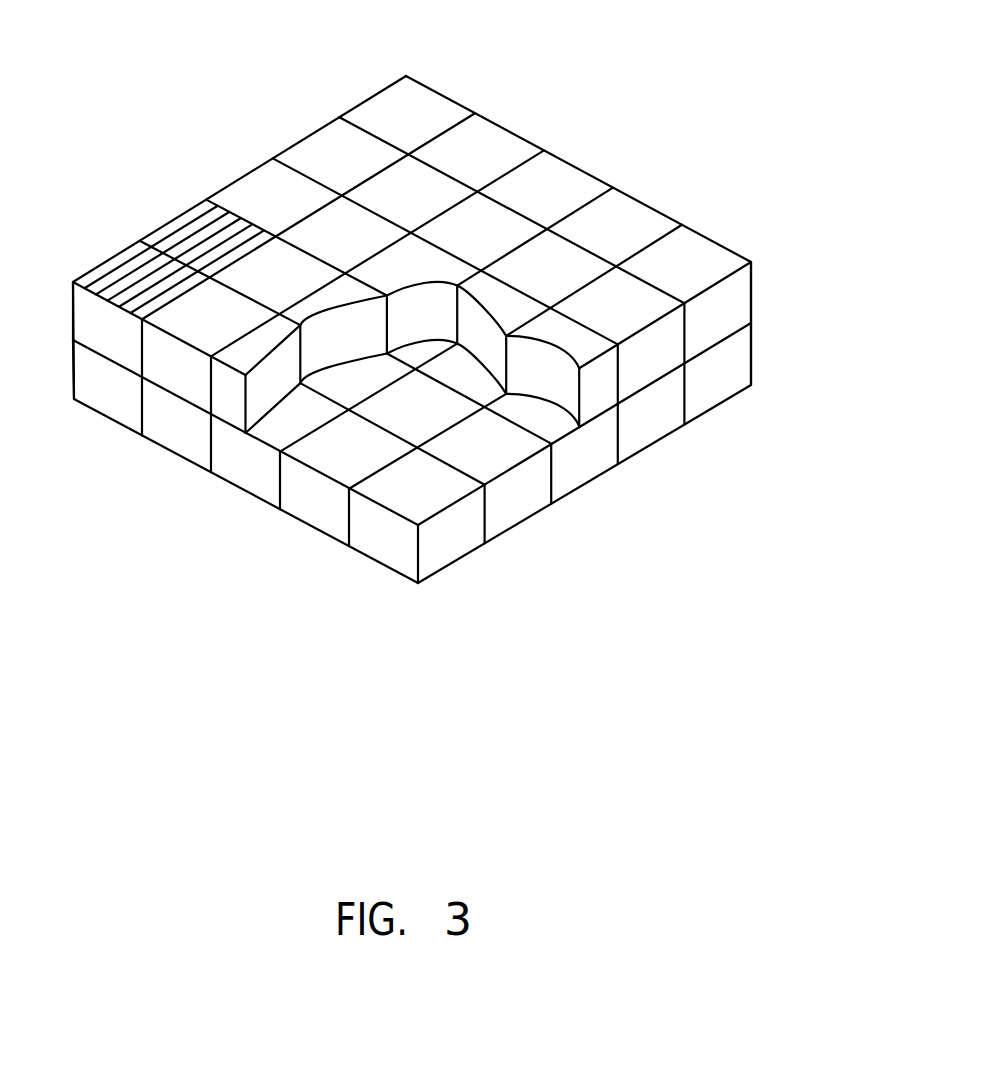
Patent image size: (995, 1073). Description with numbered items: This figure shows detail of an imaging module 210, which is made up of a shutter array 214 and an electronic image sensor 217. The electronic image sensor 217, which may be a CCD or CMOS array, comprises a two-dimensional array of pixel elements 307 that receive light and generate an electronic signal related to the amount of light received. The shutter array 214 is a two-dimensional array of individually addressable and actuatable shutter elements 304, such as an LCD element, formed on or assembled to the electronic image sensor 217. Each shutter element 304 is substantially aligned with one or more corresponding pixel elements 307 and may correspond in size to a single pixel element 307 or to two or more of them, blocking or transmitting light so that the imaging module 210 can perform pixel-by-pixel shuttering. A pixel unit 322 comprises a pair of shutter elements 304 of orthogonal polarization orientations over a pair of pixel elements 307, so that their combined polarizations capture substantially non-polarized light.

The imaging module 210 is at (257, 570).
The shutter array 214 is at (760, 312).
The electronic image sensor 217 is at (760, 325).
The shutter element 304 is at (477, 145).
The pixel element 307 is at (475, 452).
The pixel unit 322 is at (193, 189).